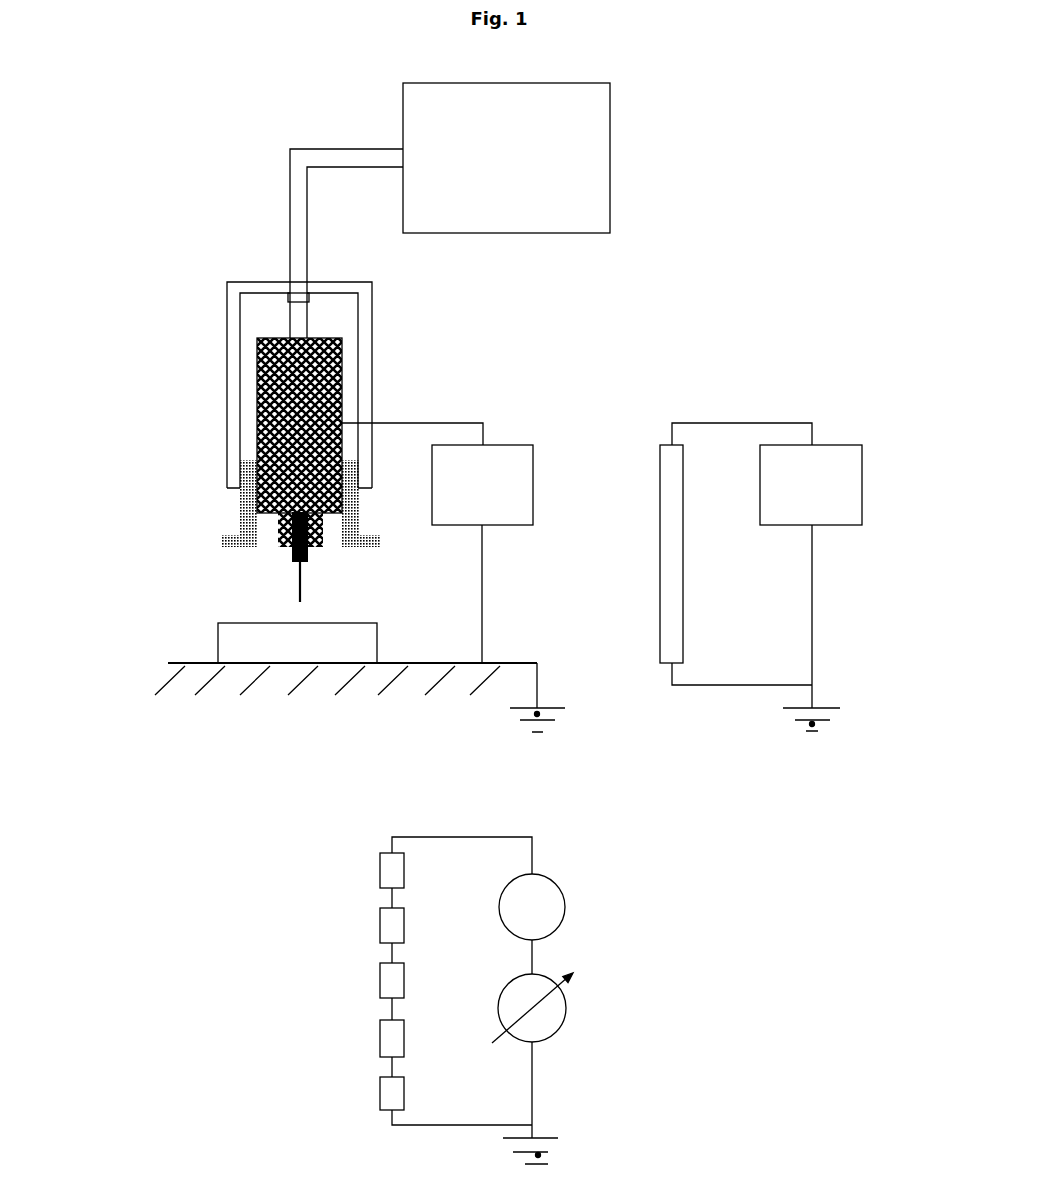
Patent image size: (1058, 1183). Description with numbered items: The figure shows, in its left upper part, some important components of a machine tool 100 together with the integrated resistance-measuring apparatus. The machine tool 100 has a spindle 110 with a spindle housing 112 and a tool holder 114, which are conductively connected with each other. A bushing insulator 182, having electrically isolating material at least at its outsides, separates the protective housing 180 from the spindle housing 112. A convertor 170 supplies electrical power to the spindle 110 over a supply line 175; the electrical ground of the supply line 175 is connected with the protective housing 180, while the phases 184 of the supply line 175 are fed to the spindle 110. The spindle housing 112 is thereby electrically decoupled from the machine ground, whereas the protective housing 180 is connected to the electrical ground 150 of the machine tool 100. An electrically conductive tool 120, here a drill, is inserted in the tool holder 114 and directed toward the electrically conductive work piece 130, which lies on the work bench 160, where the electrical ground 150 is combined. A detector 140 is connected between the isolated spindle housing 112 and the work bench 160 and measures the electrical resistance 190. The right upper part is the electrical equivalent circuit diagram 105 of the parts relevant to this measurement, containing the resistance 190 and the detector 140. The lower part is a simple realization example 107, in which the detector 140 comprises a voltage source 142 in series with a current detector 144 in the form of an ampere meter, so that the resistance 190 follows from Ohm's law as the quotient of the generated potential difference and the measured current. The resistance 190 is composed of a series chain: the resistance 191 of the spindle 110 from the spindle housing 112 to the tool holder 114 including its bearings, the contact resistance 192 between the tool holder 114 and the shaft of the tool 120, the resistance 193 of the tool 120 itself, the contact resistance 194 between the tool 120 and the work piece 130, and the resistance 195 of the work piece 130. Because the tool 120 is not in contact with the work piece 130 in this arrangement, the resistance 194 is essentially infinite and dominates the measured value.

The machine tool 100 is at (270, 249).
The electrical equivalent circuit diagram 105 is at (736, 508).
The realization example 107 is at (578, 854).
The spindle 110 is at (318, 376).
The spindle housing 112 is at (257, 407).
The tool holder 114 is at (277, 540).
The tool 120 is at (300, 580).
The work piece 130 is at (297, 643).
The detector 140 is at (647, 485).
The voltage source 142 is at (553, 904).
The current detector 144 is at (548, 1010).
The electrical ground 150 is at (812, 724).
The work bench 160 is at (274, 663).
The convertor 170 is at (506, 158).
The supply line 175 is at (317, 155).
The protective housing 180 is at (365, 317).
The bushing insulator 182 is at (248, 502).
The phases 184 is at (292, 302).
The resistance 190 is at (665, 592).
The resistance of the spindle 191 is at (387, 871).
The contact resistance 192 is at (387, 927).
The resistance of the tool 193 is at (387, 982).
The contact resistance 194 is at (387, 1038).
The resistance of the work piece 195 is at (387, 1094).